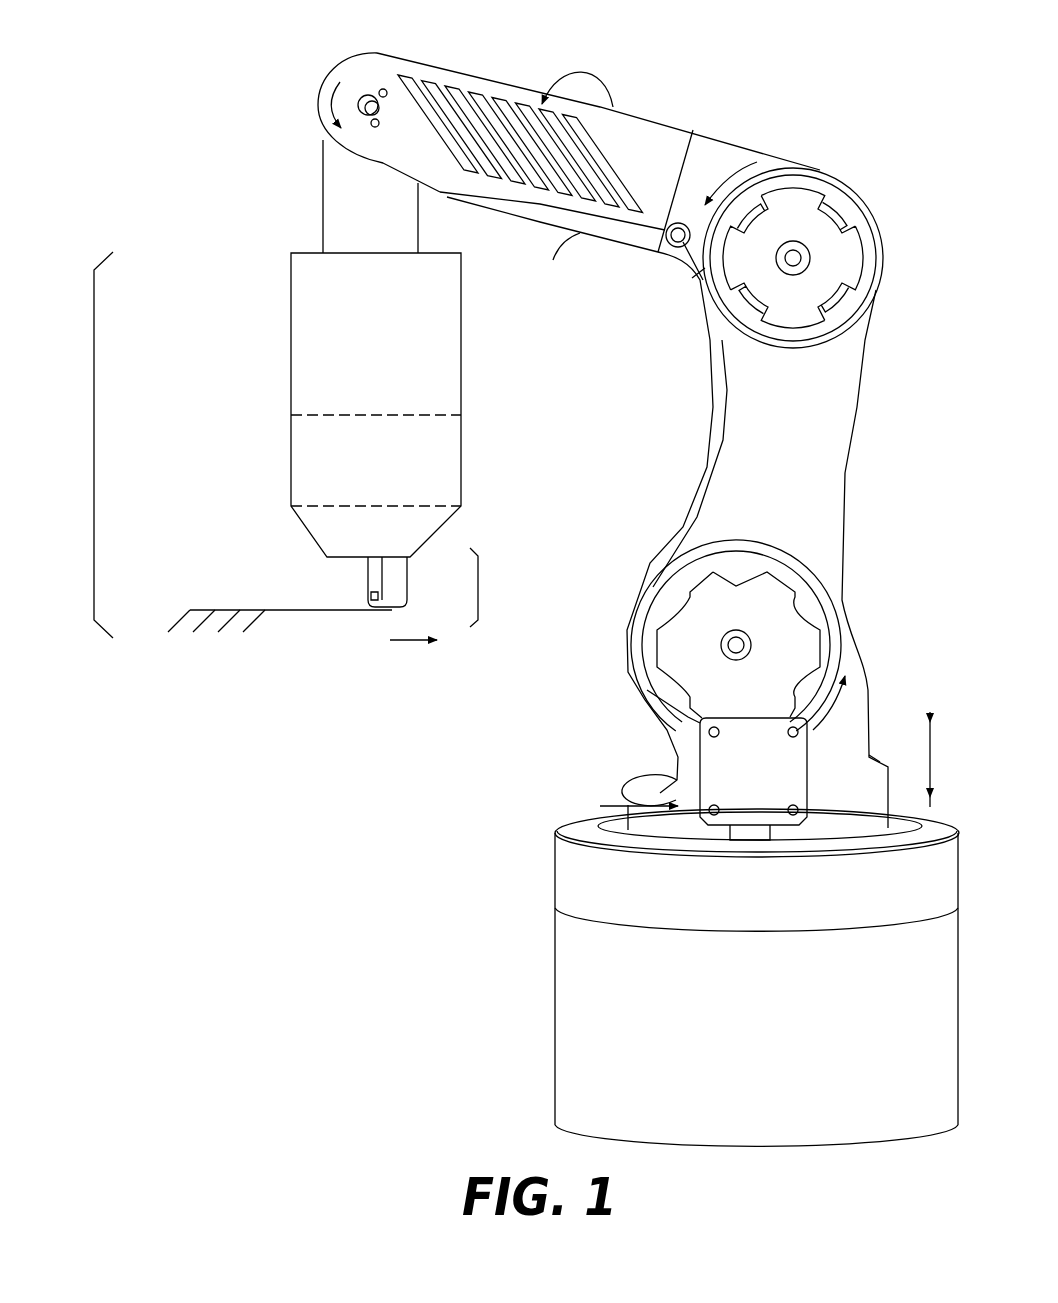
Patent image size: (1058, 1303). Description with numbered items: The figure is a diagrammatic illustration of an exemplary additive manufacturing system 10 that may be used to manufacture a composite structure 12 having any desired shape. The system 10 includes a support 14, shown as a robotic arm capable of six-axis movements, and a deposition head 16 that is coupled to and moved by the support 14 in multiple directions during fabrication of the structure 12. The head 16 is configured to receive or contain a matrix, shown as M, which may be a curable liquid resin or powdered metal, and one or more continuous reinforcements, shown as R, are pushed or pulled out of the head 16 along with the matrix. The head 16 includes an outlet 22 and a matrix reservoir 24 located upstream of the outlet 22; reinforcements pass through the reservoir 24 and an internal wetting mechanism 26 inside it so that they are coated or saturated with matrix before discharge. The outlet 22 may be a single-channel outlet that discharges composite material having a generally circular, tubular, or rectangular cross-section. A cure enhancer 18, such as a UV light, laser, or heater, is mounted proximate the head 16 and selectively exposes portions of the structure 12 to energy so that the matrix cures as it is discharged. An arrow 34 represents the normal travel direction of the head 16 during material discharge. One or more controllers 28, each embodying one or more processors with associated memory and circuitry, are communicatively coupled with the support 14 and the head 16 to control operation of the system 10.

The system 10 is at (355, 856).
The composite structure 12 is at (178, 622).
The support 14 is at (787, 498).
The deposition head 16 is at (94, 450).
The cure enhancer 18 is at (367, 578).
The outlet 22 is at (480, 588).
The matrix reservoir 24 is at (291, 402).
The wetting mechanism 26 is at (389, 475).
The controller 28 is at (764, 782).
The arrow 34 is at (410, 645).